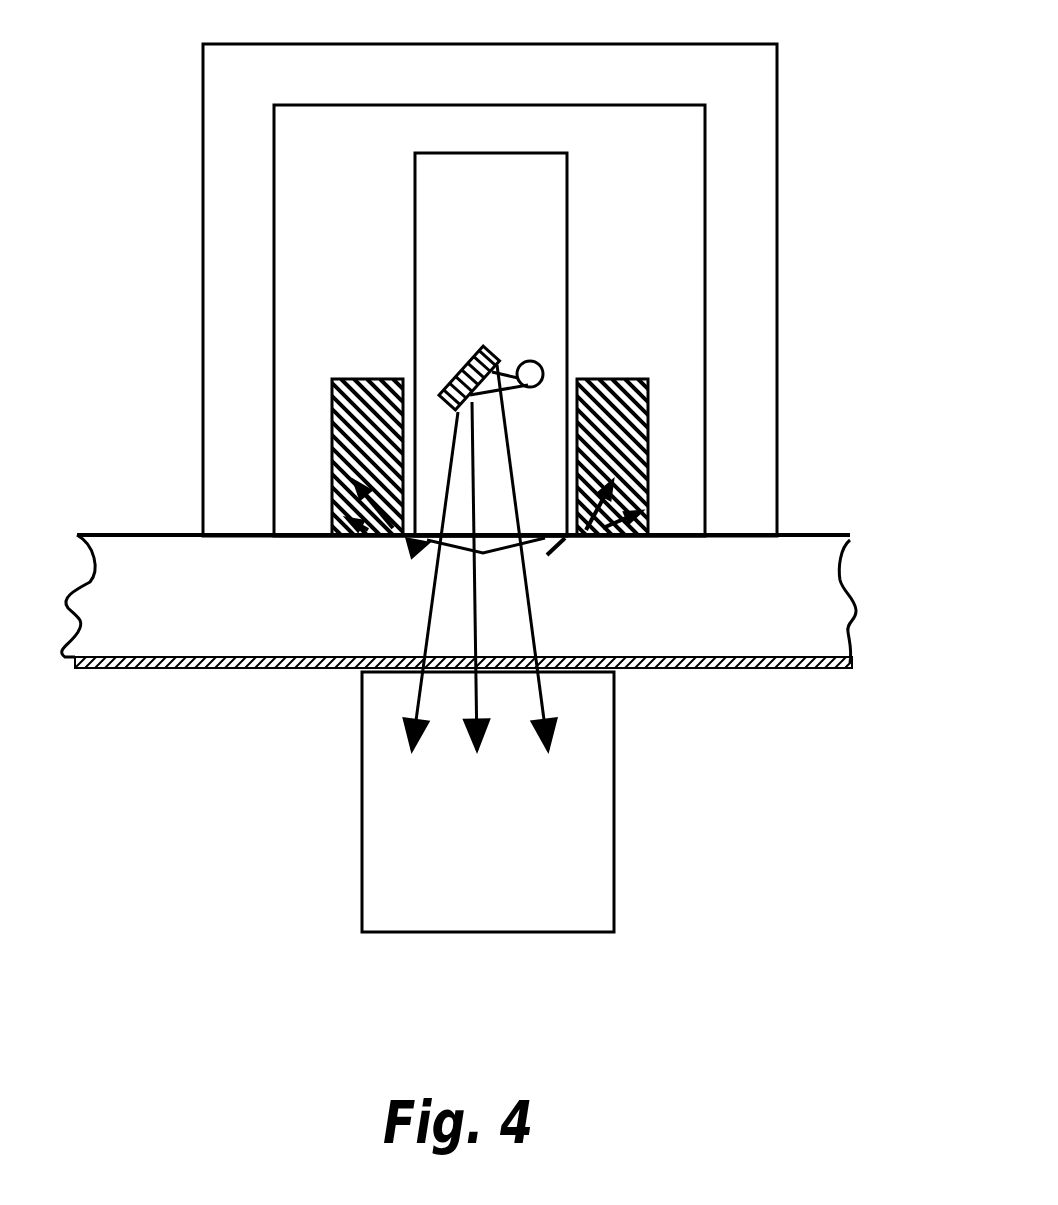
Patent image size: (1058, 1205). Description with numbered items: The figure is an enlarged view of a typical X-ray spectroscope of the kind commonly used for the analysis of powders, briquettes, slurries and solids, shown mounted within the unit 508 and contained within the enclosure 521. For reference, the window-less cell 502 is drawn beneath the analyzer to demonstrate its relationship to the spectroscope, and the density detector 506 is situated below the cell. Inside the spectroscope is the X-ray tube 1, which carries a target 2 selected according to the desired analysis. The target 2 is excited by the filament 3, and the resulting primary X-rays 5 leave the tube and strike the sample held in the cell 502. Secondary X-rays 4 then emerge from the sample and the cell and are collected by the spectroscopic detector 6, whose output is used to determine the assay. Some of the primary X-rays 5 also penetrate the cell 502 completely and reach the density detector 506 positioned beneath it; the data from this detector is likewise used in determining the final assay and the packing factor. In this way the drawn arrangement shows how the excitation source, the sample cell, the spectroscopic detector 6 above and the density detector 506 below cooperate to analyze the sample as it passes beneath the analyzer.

The enclosure 521 is at (740, 167).
The X-ray analyzer unit 508 is at (337, 259).
The X-ray tube 1 is at (506, 259).
The spectroscopic detector 6 is at (330, 448).
The target 2 is at (462, 365).
The filament 3 is at (532, 367).
The primary X-rays 5 is at (517, 450).
The secondary X-rays 4 is at (412, 553).
The window-less cell 502 is at (268, 667).
The density detector 506 is at (537, 792).